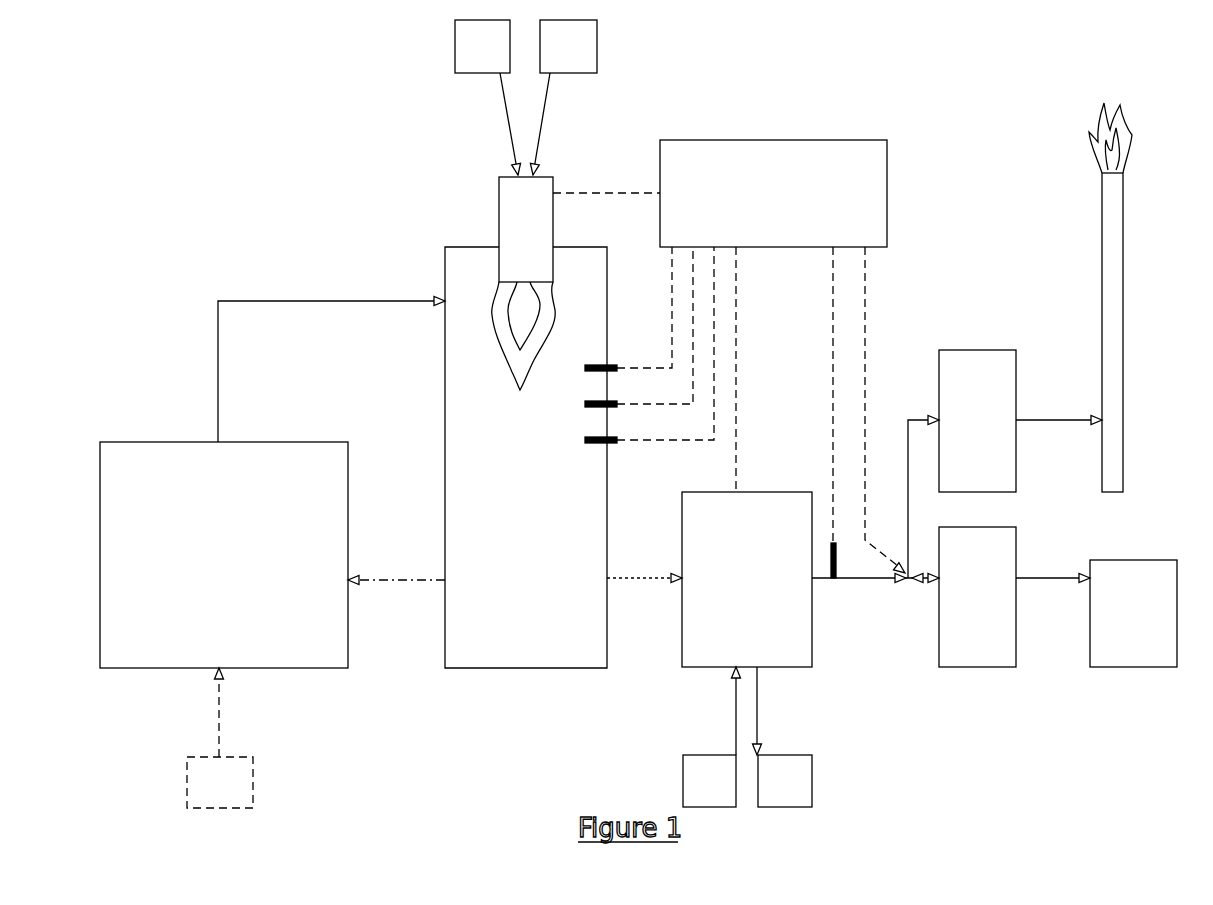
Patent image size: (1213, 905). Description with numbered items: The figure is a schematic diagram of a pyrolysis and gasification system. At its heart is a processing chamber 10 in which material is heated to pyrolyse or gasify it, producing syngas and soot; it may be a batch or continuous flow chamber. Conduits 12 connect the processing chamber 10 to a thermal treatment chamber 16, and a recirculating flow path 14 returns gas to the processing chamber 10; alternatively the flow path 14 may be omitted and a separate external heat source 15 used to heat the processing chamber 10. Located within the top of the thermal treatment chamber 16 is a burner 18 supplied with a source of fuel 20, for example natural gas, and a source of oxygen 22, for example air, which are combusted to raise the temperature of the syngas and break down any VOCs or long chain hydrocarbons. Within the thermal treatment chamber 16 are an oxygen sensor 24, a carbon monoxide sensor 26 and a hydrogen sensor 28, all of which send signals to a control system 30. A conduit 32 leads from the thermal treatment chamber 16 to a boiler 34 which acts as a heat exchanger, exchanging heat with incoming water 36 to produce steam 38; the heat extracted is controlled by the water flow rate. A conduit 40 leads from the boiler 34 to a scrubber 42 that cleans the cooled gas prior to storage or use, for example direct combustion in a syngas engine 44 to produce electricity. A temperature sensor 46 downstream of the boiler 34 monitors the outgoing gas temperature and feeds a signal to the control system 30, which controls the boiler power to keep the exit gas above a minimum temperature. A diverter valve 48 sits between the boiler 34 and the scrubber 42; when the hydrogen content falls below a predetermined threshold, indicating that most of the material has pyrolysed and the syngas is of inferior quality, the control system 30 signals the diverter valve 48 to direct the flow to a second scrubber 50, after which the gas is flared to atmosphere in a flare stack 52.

The processing chamber 10 is at (209, 563).
The conduit 12 is at (285, 300).
The flow path 14 is at (393, 580).
The external heat source 15 is at (206, 791).
The thermal treatment chamber 16 is at (512, 563).
The burner 18 is at (512, 237).
The source of fuel 20 is at (468, 57).
The source of oxygen 22 is at (554, 57).
The oxygen sensor 24 is at (618, 368).
The carbon monoxide sensor 26 is at (618, 404).
The hydrogen sensor 28 is at (644, 523).
The control system 30 is at (759, 193).
The conduit 32 is at (630, 578).
The boiler 34 is at (728, 578).
The incoming water 36 is at (695, 788).
The steam 38 is at (770, 788).
The conduit 40 is at (872, 582).
The scrubber 42 is at (963, 593).
The syngas engine 44 is at (1119, 611).
The temperature sensor 46 is at (836, 582).
The diverter valve 48 is at (905, 586).
The second scrubber 50 is at (963, 418).
The flare stack 52 is at (1123, 288).